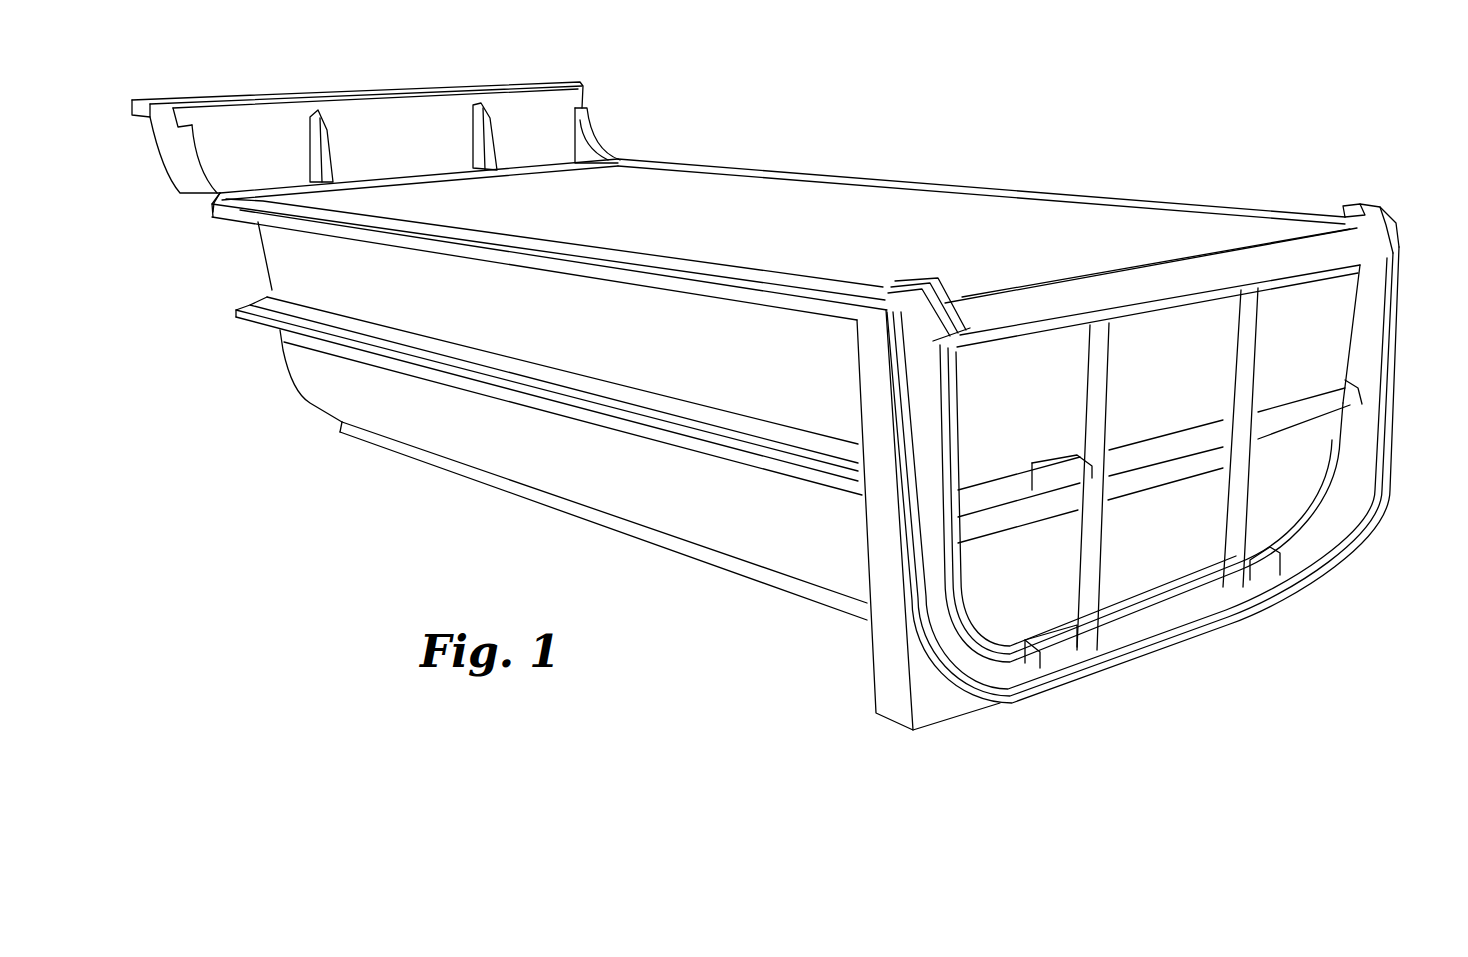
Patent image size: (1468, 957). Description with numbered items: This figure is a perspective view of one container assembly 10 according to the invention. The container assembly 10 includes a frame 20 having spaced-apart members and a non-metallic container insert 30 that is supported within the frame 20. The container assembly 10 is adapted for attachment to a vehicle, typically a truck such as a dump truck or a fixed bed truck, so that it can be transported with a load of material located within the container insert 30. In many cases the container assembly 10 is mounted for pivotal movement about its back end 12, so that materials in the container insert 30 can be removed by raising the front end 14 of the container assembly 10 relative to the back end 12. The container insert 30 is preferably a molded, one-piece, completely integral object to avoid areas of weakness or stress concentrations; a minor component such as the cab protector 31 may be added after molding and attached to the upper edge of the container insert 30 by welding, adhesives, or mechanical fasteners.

The container assembly 10 is at (1127, 148).
The back end 12 is at (1402, 455).
The front end 14 is at (236, 386).
The frame 20 is at (197, 200).
The container insert 30 is at (880, 212).
The cab protector 31 is at (393, 84).